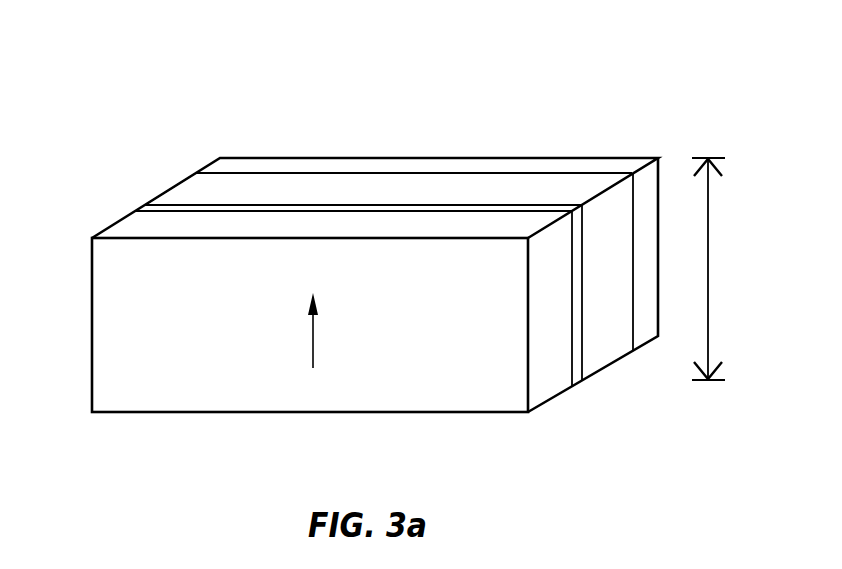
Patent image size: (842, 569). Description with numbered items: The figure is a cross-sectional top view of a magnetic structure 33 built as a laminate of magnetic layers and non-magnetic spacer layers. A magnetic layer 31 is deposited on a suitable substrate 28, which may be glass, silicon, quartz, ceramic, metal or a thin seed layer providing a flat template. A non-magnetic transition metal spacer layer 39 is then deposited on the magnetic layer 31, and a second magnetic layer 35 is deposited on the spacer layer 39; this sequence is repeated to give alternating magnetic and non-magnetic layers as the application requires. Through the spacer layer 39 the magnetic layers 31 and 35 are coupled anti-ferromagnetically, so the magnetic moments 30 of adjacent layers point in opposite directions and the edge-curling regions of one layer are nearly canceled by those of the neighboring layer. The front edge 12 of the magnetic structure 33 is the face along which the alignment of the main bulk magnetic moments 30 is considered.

The magnetic structure 33 is at (441, 132).
The substrate 28 is at (590, 167).
The second magnetic layer 35 is at (192, 186).
The non-magnetic transition metal spacer layer 39 is at (353, 211).
The magnetic layer 31 is at (137, 225).
The magnetic moments 30 is at (312, 318).
The front edge 12 is at (709, 270).